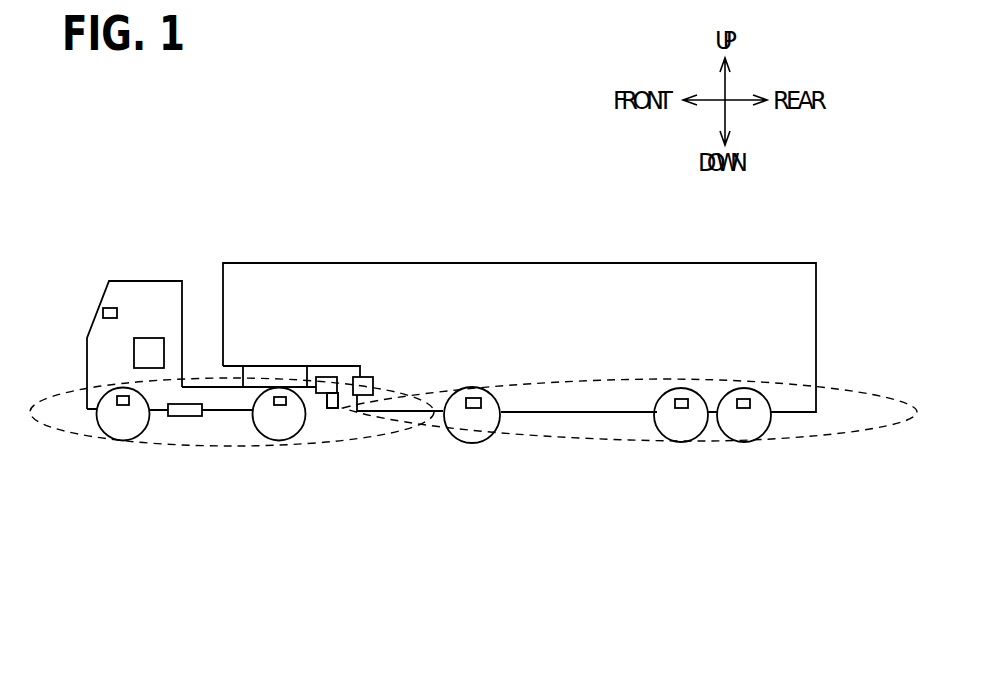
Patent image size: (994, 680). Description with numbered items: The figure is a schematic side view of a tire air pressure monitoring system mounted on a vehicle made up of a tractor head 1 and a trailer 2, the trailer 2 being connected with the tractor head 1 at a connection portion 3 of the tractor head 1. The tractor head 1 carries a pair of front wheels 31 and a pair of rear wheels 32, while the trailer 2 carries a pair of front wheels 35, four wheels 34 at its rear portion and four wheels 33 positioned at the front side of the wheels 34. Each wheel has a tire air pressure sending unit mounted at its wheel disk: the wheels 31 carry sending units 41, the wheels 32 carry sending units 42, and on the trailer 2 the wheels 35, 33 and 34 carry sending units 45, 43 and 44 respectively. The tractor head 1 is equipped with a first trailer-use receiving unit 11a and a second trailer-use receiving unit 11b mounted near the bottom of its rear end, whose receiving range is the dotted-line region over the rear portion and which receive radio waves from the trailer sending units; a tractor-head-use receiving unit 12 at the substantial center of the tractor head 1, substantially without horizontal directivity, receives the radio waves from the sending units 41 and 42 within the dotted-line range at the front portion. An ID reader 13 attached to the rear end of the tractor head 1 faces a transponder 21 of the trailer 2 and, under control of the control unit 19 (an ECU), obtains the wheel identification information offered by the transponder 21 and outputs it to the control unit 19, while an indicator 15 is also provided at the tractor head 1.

The tractor head 1 is at (112, 344).
The trailer 2 is at (295, 273).
The connection portion 3 is at (263, 373).
The first trailer-use receiving unit 11a is at (334, 408).
The second trailer-use receiving unit 11b is at (369, 447).
The tractor-head-use receiving unit 12 is at (183, 416).
The ID reader 13 is at (330, 377).
The indicator 15 is at (112, 308).
The control unit 19 is at (148, 338).
The transponder 21 is at (365, 377).
The wheels 31 is at (97, 424).
The wheels 32 is at (287, 440).
The wheels 33 is at (675, 442).
The wheels 34 is at (768, 442).
The wheels 35 is at (481, 443).
The tire air pressure sending unit 41 is at (126, 405).
The tire air pressure sending unit 42 is at (276, 404).
The tire air pressure sending unit 43 is at (679, 399).
The tire air pressure sending unit 44 is at (742, 399).
The tire air pressure sending unit 45 is at (472, 398).